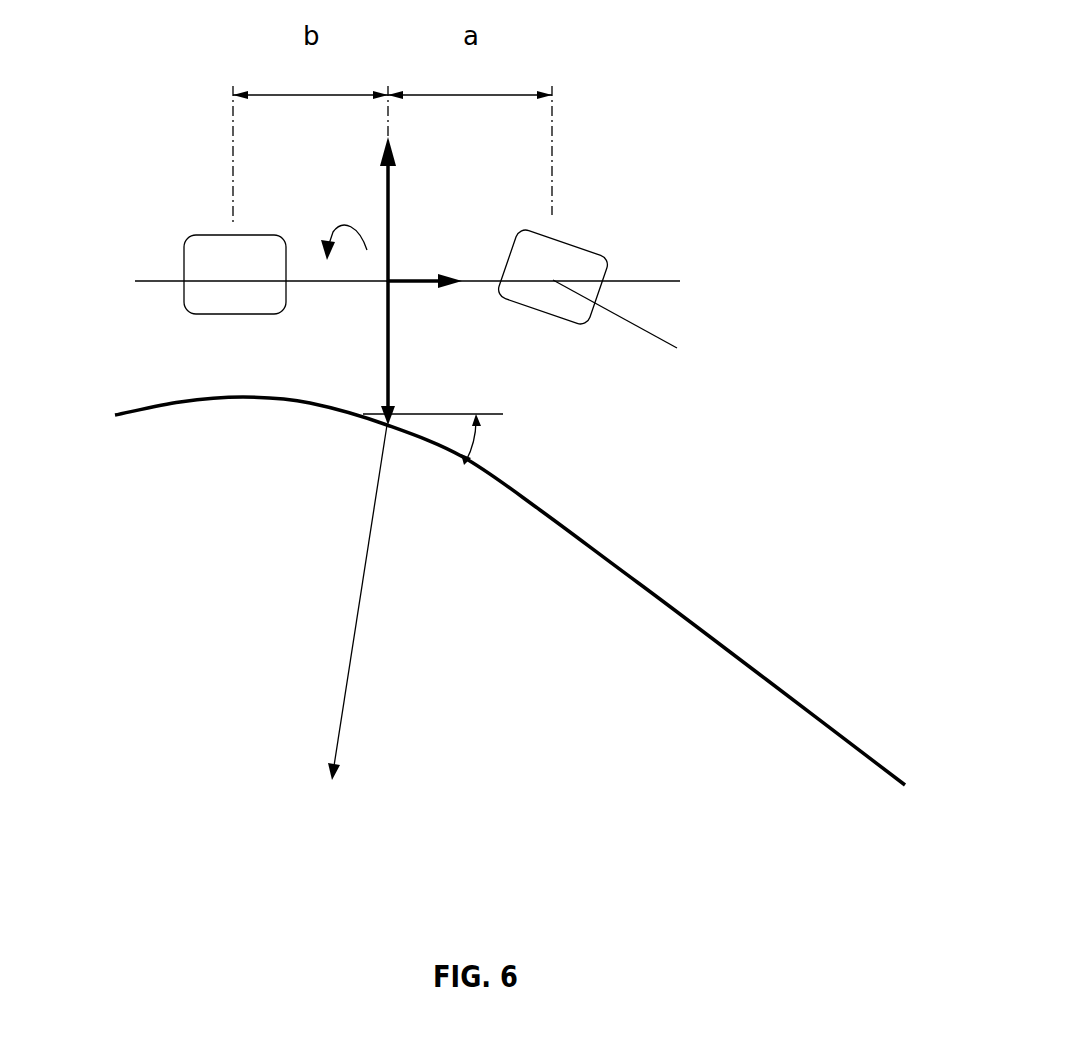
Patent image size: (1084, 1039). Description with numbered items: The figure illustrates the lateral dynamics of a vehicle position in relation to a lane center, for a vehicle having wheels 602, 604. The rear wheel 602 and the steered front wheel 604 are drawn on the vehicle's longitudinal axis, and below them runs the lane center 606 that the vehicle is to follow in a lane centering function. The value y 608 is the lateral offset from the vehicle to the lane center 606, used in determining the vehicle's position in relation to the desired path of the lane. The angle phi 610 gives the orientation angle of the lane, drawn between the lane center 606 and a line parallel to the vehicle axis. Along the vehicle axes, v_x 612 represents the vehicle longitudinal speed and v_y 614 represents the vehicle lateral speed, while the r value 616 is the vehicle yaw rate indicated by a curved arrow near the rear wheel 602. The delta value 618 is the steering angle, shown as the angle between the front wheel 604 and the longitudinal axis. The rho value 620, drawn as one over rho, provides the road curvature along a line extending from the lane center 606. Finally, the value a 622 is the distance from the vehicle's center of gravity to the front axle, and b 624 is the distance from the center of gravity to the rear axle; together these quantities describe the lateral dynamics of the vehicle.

The wheel 602 is at (184, 268).
The wheel 604 is at (565, 238).
The lane center 606 is at (766, 701).
The value y 608 is at (385, 315).
The phi 610 is at (480, 442).
The v_x 612 is at (405, 278).
The v_y 614 is at (385, 179).
The r value 616 is at (325, 222).
The delta value 618 is at (663, 338).
The rho value 620 is at (358, 625).
The value a 622 is at (441, 94).
The value b 624 is at (300, 94).